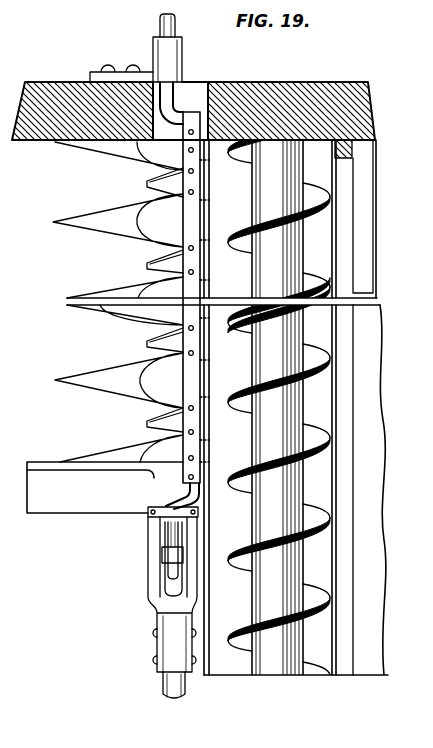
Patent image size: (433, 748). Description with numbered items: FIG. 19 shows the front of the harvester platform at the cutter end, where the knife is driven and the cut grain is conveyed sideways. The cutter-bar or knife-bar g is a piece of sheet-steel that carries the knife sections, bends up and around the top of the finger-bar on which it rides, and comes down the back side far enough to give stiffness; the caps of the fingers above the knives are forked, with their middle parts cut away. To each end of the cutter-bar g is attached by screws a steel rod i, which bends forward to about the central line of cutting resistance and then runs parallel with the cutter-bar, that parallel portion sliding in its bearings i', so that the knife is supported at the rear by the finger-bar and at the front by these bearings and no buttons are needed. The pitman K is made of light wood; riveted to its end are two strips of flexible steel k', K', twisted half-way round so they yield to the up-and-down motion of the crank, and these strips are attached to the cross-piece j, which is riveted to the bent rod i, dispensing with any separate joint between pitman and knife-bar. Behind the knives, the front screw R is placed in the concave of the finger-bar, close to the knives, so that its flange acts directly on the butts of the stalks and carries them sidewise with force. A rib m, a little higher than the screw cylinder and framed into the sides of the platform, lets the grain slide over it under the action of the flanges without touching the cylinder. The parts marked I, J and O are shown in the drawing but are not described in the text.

The steel rod i is at (174, 103).
The rib m is at (344, 227).
The perforated bar I is at (204, 297).
The blades J is at (118, 302).
The cutter-bar g is at (200, 449).
The front screw R is at (279, 413).
The block O is at (105, 487).
The cross-piece j is at (160, 505).
The bearing i' is at (182, 493).
The flexible steel strip k' is at (156, 559).
The flexible steel strip K' is at (186, 594).
The pitman K is at (174, 697).